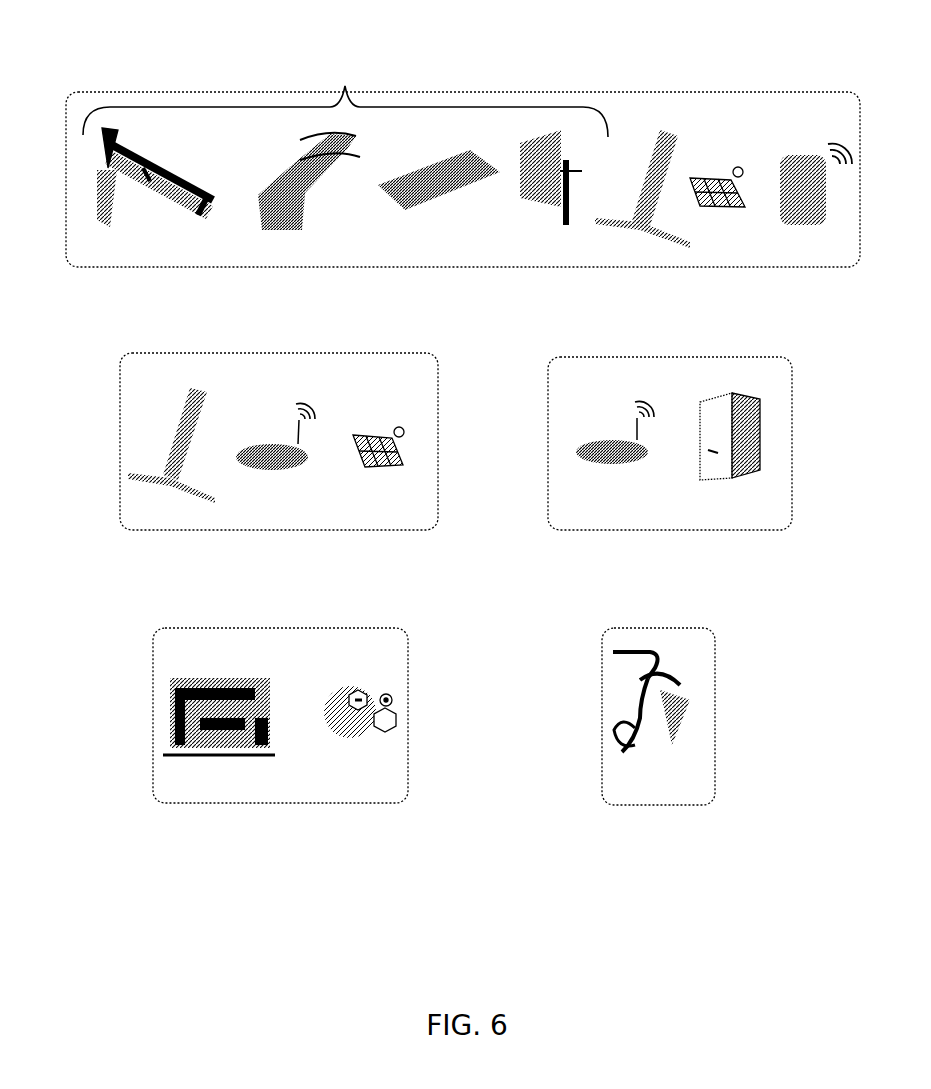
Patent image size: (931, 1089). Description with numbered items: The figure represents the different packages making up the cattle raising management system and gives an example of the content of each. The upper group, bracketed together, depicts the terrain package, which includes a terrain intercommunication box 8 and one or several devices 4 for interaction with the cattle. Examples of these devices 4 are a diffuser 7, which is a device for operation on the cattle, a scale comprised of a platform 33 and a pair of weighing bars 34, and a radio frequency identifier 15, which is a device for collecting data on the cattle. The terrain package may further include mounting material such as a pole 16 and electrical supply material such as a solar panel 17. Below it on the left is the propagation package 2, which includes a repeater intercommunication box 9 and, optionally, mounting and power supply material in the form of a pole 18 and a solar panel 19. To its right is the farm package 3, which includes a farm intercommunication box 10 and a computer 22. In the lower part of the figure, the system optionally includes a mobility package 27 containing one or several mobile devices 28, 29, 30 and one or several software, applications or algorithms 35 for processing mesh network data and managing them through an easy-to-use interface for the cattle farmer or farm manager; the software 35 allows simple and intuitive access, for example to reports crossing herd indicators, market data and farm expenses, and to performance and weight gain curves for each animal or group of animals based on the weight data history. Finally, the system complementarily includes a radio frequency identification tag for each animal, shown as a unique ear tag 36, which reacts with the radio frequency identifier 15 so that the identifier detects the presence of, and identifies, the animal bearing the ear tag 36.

The propagation package 2 is at (92, 514).
The farm package 3 is at (808, 353).
The devices for interaction with the cattle 4 is at (345, 92).
The diffuser 7 is at (167, 185).
The terrain intercommunication box 8 is at (797, 222).
The repeater intercommunication box 9 is at (263, 453).
The farm intercommunication box 10 is at (630, 460).
The radio frequency identifier 15 is at (539, 207).
The pole 16 is at (663, 133).
The solar panel 17 is at (712, 178).
The pole 18 is at (183, 418).
The solar panel 19 is at (382, 460).
The computer 22 is at (742, 432).
The mobility package 27 is at (290, 818).
The mobile device 28 is at (159, 801).
The mobile device 29 is at (159, 801).
The mobile device 30 is at (215, 717).
The platform 33 is at (419, 207).
The weighing bars 34 is at (305, 203).
The software 35 is at (387, 698).
The ear tag 36 is at (677, 710).